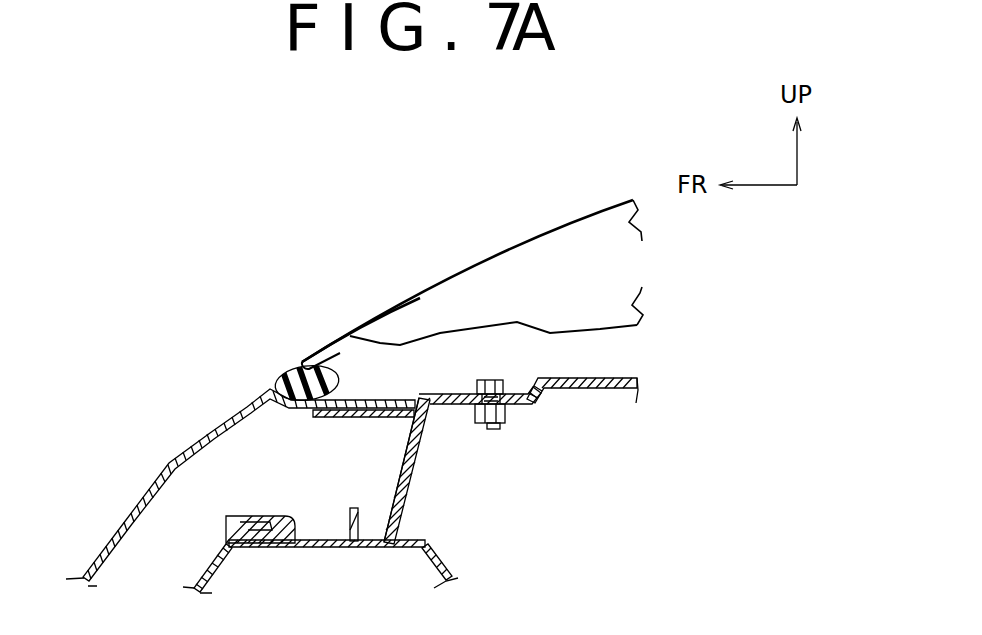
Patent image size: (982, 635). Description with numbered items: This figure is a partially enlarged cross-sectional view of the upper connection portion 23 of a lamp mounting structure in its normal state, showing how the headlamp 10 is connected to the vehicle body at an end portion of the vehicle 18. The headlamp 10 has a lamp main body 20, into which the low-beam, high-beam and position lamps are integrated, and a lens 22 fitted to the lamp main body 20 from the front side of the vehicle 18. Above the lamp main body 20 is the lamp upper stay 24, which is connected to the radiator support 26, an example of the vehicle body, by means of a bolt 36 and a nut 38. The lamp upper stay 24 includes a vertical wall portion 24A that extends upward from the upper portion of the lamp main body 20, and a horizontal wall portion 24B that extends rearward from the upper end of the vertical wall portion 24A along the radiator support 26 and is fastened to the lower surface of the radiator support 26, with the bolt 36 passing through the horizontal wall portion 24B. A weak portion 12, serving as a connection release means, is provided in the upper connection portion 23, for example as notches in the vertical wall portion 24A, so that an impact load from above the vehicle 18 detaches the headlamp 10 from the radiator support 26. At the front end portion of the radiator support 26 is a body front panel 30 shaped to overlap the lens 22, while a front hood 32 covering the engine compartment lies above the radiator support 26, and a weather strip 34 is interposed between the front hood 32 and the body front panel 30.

The headlamp 10 is at (266, 510).
The weak portion 12 is at (398, 467).
The vehicle 18 is at (526, 226).
The lamp main body 20 is at (342, 556).
The lens 22 is at (203, 559).
The upper connection portion 23 is at (495, 362).
The lamp upper stay 24 is at (429, 465).
The vertical wall portion 24A is at (424, 448).
The horizontal wall portion 24B is at (450, 406).
The radiator support 26 is at (622, 378).
The body front panel 30 is at (168, 466).
The front hood 32 is at (456, 273).
The weather strip 34 is at (280, 368).
The bolt 36 is at (479, 380).
The nut 38 is at (506, 417).